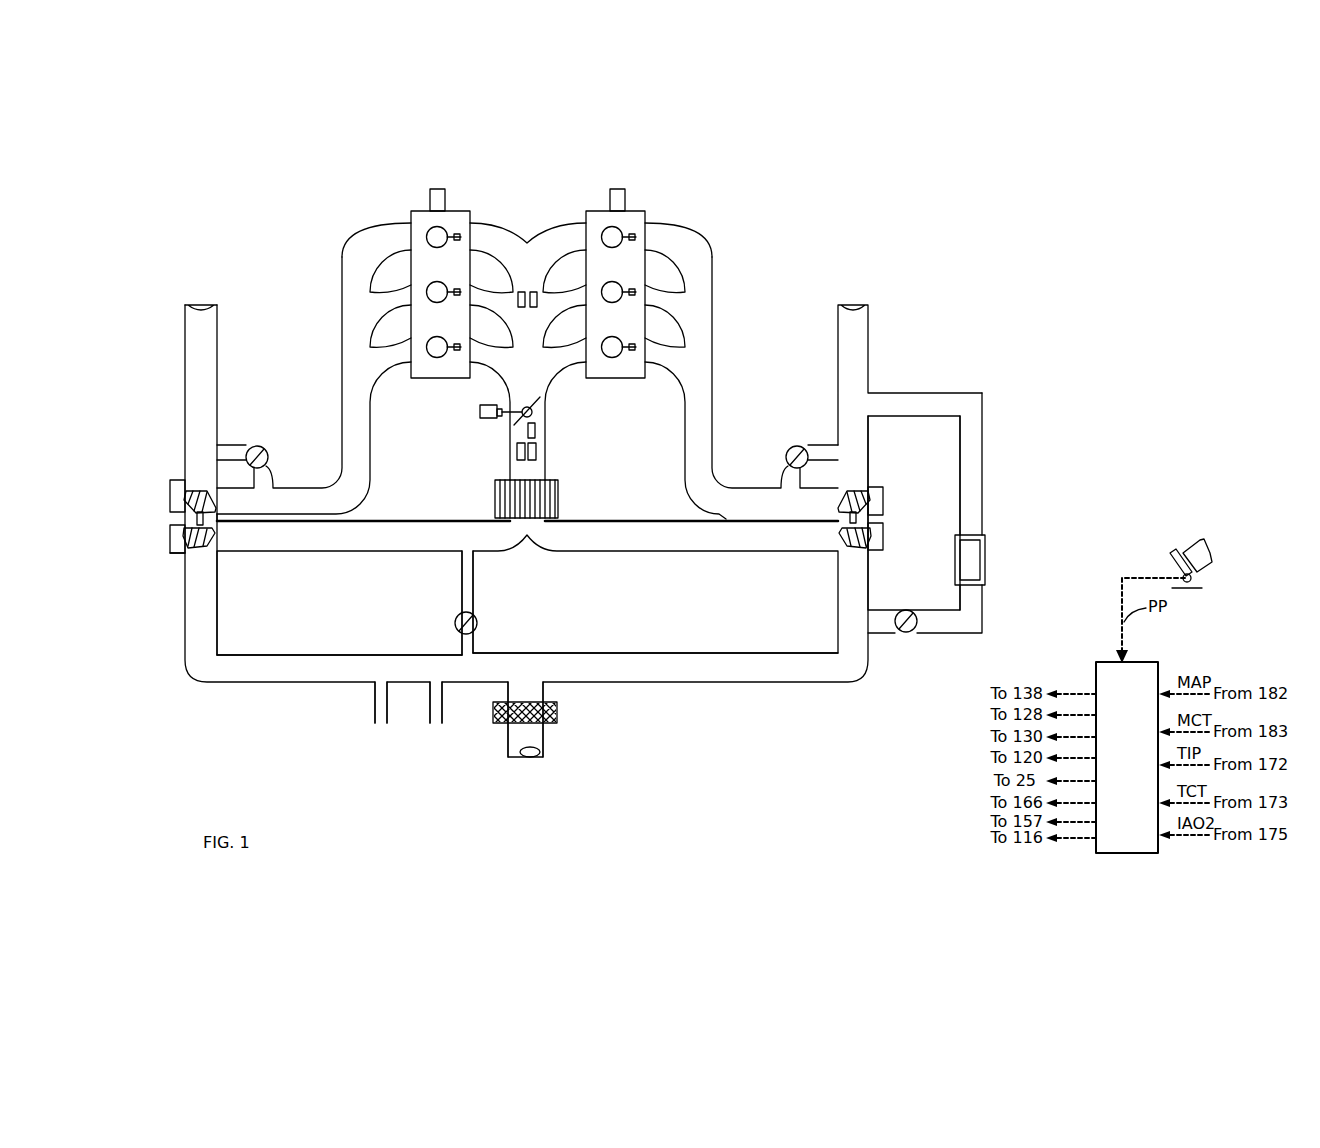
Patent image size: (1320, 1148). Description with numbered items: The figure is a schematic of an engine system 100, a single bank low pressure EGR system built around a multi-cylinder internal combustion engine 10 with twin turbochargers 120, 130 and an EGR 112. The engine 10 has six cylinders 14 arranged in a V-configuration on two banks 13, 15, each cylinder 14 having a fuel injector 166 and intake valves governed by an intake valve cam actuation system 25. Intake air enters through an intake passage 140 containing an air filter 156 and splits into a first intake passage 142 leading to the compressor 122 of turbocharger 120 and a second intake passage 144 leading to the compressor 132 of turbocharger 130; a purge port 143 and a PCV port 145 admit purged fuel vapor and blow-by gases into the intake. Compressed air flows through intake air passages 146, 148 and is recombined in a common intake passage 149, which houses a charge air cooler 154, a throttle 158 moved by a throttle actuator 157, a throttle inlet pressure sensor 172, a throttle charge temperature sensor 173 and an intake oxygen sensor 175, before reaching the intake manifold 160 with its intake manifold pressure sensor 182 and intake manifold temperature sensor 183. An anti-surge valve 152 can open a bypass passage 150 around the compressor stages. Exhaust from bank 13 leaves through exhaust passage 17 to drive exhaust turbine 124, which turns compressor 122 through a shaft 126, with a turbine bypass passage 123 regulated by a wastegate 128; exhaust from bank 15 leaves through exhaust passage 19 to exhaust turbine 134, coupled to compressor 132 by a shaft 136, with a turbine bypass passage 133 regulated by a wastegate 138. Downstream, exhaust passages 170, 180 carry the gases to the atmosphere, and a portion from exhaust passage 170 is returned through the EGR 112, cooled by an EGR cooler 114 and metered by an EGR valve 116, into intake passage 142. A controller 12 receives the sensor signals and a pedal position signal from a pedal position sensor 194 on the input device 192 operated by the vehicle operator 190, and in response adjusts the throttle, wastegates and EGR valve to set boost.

The internal combustion engine 10 is at (836, 208).
The engine system 100 is at (1128, 201).
The controller 12 is at (1137, 768).
The first bank of cylinders 13 is at (638, 213).
The cylinder 14 is at (600, 284).
The second bank of cylinders 15 is at (412, 213).
The exhaust passage 17 is at (713, 428).
The exhaust passage 19 is at (342, 421).
The intake valve cam actuation system 25 is at (445, 193).
The EGR 112 is at (982, 481).
The EGR cooler 114 is at (986, 562).
The EGR valve 116 is at (910, 632).
The turbocharger 120 is at (855, 483).
The compressor 122 is at (858, 548).
The turbine bypass passage 123 is at (822, 446).
The exhaust turbine 124 is at (866, 496).
The shaft 126 is at (860, 522).
The wastegate 128 is at (790, 449).
The turbocharger 130 is at (188, 482).
The compressor 132 is at (185, 551).
The turbine bypass passage 133 is at (235, 446).
The exhaust turbine 134 is at (188, 494).
The shaft 136 is at (188, 535).
The wastegate 138 is at (266, 451).
The intake passage 140 is at (540, 752).
The intake passage 142 is at (681, 655).
The purge port 143 is at (442, 711).
The intake passage 144 is at (326, 655).
The PCV port 145 is at (375, 709).
The intake air passage 146 is at (672, 556).
The intake air passage 148 is at (303, 556).
The common intake passage 149 is at (545, 425).
The bypass passage 150 is at (476, 587).
The anti-surge valve 152 is at (477, 620).
The charge air cooler 154 is at (558, 499).
The air filter 156 is at (557, 713).
The throttle actuator 157 is at (481, 406).
The throttle 158 is at (527, 407).
The intake manifold 160 is at (529, 225).
The fuel injector 166 is at (624, 291).
The exhaust passage 170 is at (838, 348).
The throttle inlet pressure sensor 172 is at (516, 455).
The throttle charge temperature sensor 173 is at (537, 455).
The intake oxygen sensor 175 is at (536, 432).
The exhaust passage 180 is at (217, 346).
The intake manifold pressure sensor 182 is at (521, 307).
The intake manifold temperature sensor 183 is at (534, 307).
The vehicle operator 190 is at (1210, 547).
The input device 192 is at (1175, 560).
The pedal position sensor 194 is at (1195, 578).